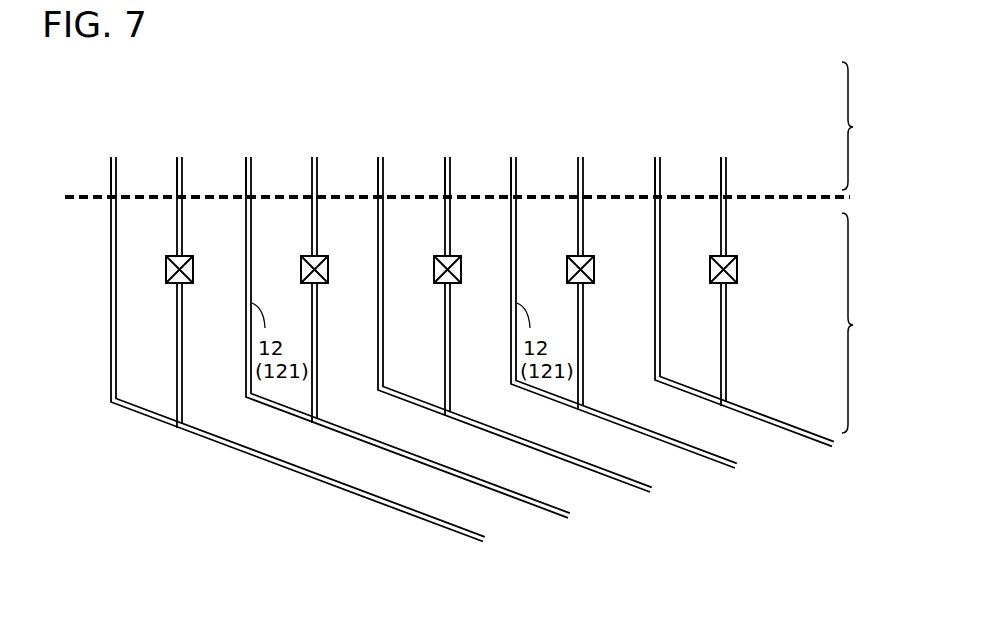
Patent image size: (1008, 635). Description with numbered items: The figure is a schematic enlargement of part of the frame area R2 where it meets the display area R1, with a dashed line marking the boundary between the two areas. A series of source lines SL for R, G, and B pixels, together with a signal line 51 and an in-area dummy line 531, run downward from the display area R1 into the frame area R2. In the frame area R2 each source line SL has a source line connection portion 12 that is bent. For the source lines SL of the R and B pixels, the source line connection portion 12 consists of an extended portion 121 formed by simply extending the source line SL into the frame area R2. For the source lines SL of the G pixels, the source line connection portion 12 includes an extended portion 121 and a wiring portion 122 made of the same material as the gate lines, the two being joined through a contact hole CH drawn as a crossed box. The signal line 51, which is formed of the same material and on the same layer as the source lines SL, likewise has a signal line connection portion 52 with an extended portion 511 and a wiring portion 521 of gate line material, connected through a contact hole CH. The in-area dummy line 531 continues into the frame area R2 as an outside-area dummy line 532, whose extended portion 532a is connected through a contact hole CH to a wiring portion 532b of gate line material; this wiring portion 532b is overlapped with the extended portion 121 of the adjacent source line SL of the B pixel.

The source line connection portion 12 is at (446, 349).
The extended portion 121 is at (109, 300).
The wiring portion 122 is at (747, 345).
The signal line 51 is at (317, 160).
The signal line connection portion 52 is at (344, 312).
The extended portion 511 is at (318, 203).
The wiring portion 521 is at (319, 343).
The in-area dummy line 531 is at (583, 160).
The outside-area dummy line 532 is at (616, 312).
The extended portion 532a is at (584, 203).
The wiring portion 532b is at (585, 343).
The source line SL is at (738, 137).
The contact hole CH is at (193, 272).
The display area R1 is at (866, 126).
The frame area R2 is at (866, 323).